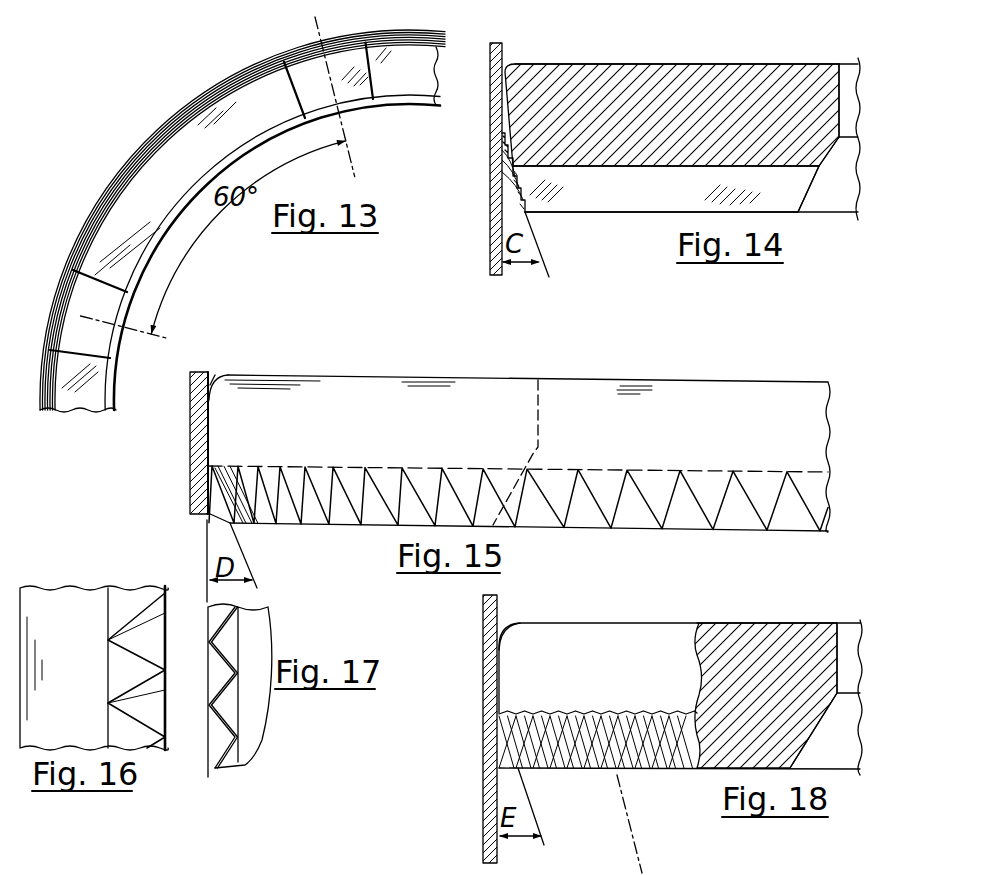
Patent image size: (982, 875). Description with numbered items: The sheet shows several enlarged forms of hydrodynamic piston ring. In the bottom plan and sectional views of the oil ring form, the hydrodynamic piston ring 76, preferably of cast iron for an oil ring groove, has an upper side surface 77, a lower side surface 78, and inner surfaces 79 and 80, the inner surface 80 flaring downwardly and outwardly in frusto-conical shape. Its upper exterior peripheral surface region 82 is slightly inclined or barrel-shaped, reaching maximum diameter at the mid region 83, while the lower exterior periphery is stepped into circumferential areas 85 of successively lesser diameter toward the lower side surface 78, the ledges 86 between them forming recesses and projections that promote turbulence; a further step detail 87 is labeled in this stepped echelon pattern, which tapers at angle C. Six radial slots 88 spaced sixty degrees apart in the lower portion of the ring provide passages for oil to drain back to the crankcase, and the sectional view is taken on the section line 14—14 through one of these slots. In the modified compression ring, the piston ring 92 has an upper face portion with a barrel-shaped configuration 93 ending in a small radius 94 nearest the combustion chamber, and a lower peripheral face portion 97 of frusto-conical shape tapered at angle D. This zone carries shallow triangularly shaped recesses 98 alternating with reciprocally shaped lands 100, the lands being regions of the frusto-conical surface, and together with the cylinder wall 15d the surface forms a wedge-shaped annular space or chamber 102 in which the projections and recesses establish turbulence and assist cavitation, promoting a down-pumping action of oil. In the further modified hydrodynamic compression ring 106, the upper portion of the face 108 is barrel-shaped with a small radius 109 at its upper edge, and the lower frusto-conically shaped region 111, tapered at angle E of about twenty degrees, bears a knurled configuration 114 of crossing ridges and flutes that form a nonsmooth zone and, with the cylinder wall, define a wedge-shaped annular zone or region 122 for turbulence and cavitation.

In FIG. 13, the section line 14— 14 is at (312, 27).
In FIG. 15, the cylinder wall 15d is at (214, 384).
In FIG. 13, the hydrodynamic piston ring 76 is at (198, 172).
In FIG. 14, the hydrodynamic piston ring 76 is at (643, 75).
In FIG. 14, the upper side surface 77 is at (555, 62).
In FIG. 14, the lower side surface 78 is at (555, 210).
In FIG. 14, the inner surface 79 is at (843, 98).
In FIG. 13, the inner surface 80 is at (113, 372).
In FIG. 14, the inner surface 80 is at (815, 195).
In FIG. 14, the upper exterior peripheral surface region 82 is at (495, 85).
In FIG. 14, the mid region 83 is at (490, 135).
In FIG. 13, the circumferential areas 85 is at (44, 408).
In FIG. 14, the circumferential areas 85 is at (500, 165).
In FIG. 14, the ledges 86 is at (510, 197).
In FIG. 14, the upper step 87 is at (505, 175).
In FIG. 13, the radial slots 88 is at (337, 90).
In FIG. 14, the radial slots 88 is at (690, 185).
In FIG. 15, the piston ring 92 is at (375, 380).
In FIG. 16, the piston ring 92 is at (43, 612).
In FIG. 15, the barrel-shaped configuration 93 is at (200, 404).
In FIG. 15, the small radius 94 is at (225, 368).
In FIG. 15, the lower peripheral face portion 97 is at (212, 483).
In FIG. 15, the triangularly shaped recesses 98 is at (373, 510).
In FIG. 16, the triangularly shaped recesses 98 is at (147, 702).
In FIG. 17, the triangularly shaped recesses 98 is at (240, 738).
In FIG. 15, the lands 100 is at (393, 482).
In FIG. 16, the lands 100 is at (120, 723).
In FIG. 17, the lands 100 is at (218, 735).
In FIG. 15, the annular space or chamber 102 is at (217, 504).
In FIG. 18, the hydrodynamic compression ring 106 is at (628, 623).
In FIG. 18, the upper portion of the face 108 is at (498, 650).
In FIG. 18, the small radius 109 is at (507, 624).
In FIG. 18, the frusto-conically shaped region 111 is at (503, 734).
In FIG. 18, the knurled configuration 114 is at (572, 746).
In FIG. 18, the annular zone or region 122 is at (504, 752).